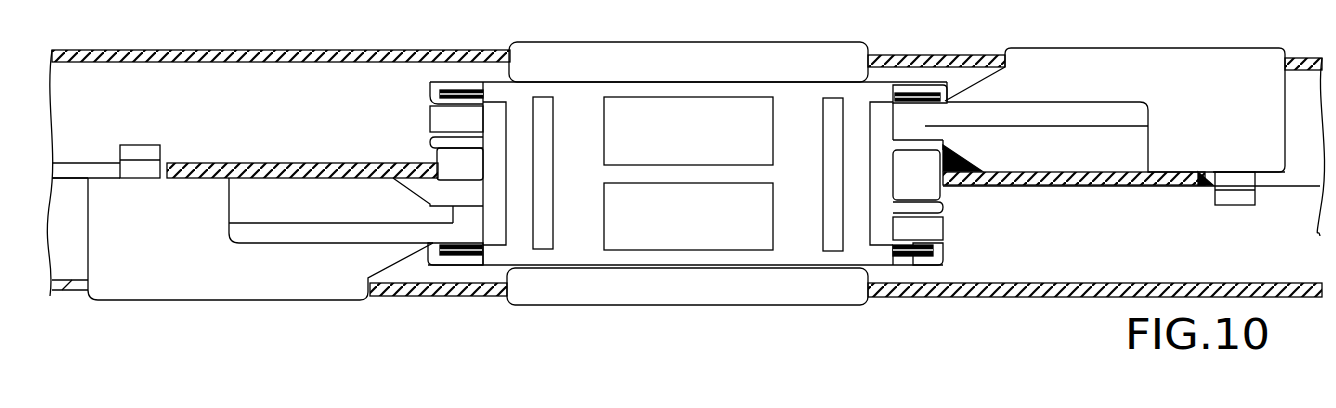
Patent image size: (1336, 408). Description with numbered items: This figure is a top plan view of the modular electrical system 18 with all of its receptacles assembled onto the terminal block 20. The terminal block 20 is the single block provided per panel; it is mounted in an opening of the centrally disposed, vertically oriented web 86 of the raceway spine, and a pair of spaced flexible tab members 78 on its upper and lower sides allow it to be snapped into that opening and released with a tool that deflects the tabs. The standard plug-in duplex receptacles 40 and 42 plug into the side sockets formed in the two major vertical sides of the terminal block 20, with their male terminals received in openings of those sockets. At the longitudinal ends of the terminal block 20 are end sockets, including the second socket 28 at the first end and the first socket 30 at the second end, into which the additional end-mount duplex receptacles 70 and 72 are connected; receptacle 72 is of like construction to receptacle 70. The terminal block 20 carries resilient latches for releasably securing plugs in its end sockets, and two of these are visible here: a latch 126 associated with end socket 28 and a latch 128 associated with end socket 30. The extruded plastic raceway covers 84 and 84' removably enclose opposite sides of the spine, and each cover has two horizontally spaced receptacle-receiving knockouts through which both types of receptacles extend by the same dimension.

The modular electrical system 18 is at (152, 99).
The web 86 is at (238, 163).
The duplex receptacle 70 is at (240, 300).
The terminal block 20 is at (487, 267).
The flexible tab members 78 is at (773, 118).
The plug-in duplex receptacle 42 is at (668, 41).
The plug-in duplex receptacle 40 is at (648, 305).
The latch 126 is at (468, 89).
The second socket 28 is at (428, 113).
The first socket 30 is at (948, 228).
The latch 128 is at (912, 268).
The raceway cover 84' is at (936, 57).
The duplex receptacle 72 is at (1108, 48).
The raceway cover 84 is at (1095, 312).